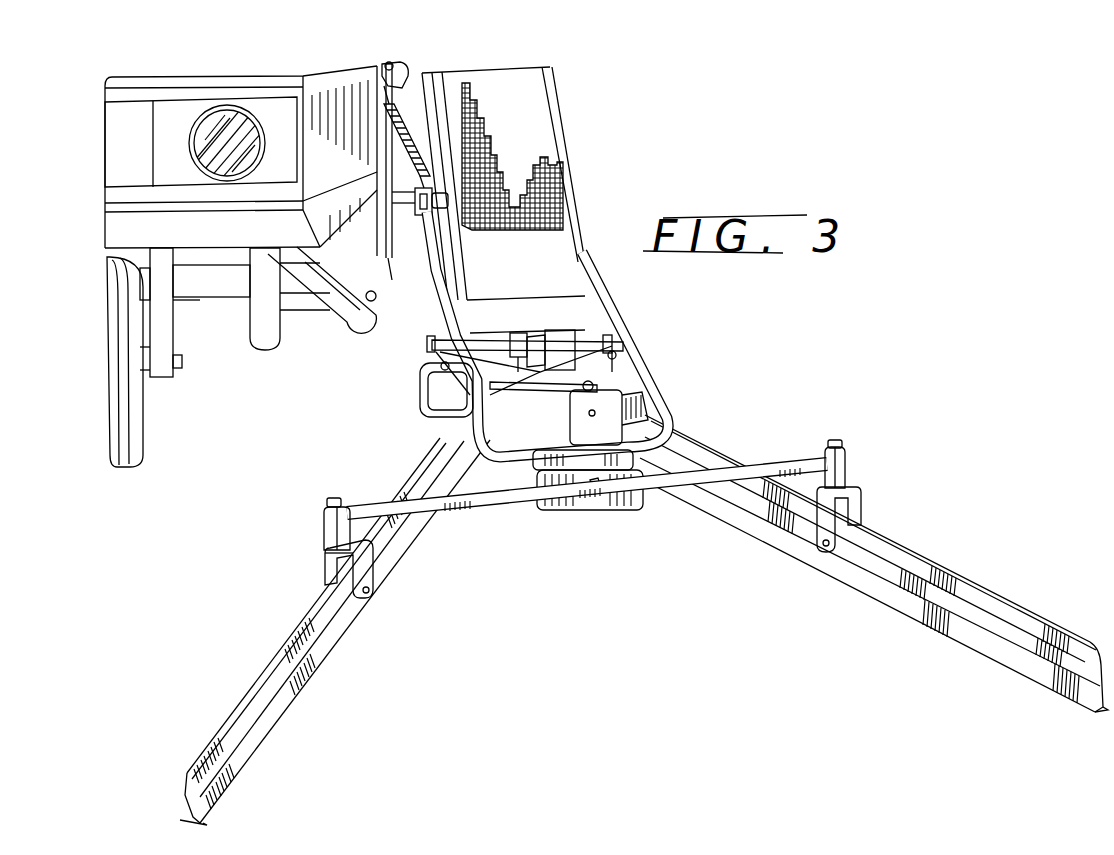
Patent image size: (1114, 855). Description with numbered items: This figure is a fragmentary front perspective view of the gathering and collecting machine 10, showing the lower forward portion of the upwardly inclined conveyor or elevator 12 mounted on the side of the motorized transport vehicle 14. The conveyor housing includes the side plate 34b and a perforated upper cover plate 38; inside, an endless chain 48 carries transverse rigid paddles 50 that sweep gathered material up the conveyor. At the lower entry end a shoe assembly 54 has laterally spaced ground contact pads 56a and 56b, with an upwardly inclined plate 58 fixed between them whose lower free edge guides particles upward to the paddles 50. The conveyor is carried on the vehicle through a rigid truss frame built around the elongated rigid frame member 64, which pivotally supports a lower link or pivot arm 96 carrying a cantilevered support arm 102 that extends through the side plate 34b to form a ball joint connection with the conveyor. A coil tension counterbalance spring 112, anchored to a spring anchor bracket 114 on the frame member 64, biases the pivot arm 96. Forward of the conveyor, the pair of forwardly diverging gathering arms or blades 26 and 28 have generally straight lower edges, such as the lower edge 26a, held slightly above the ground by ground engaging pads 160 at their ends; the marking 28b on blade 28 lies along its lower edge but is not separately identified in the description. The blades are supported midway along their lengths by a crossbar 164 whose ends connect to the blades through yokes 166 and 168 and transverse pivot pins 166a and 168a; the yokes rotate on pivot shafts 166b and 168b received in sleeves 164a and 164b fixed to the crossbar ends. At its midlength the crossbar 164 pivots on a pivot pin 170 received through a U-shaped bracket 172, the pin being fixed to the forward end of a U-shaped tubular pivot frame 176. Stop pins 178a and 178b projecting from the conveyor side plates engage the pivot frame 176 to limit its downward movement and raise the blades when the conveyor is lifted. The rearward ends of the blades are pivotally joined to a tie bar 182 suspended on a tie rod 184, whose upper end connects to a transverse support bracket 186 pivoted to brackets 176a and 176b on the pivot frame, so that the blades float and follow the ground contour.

The gathering and collecting machine 10 is at (233, 497).
The inclined conveyor or elevator 12 is at (578, 150).
The motorized transport vehicle 14 is at (100, 232).
The gathering arm or blade 26 is at (960, 573).
The lower edge of gathering arm 26a is at (947, 632).
The gathering arm or blade 28 is at (278, 663).
The left blade lower flange 28b is at (305, 683).
The side plate 34b is at (462, 285).
The upper cover plate 38 is at (565, 185).
The endless chain 48 is at (518, 333).
The transverse rigid paddles 50 is at (540, 333).
The shoe assembly 54 is at (432, 411).
The ground contact pad 56a is at (613, 393).
The ground contact pad 56b is at (430, 390).
The upwardly inclined plate 58 is at (552, 367).
The rigid frame member 64 is at (376, 296).
The lower link or pivot arm 96 is at (415, 208).
The cantilevered support arm 102 is at (430, 216).
The counterbalance spring 112 is at (398, 140).
The spring anchor bracket 114 is at (395, 84).
The ground engaging pad 160 is at (183, 820).
The crossbar 164 is at (475, 512).
The sleeve 164a is at (843, 468).
The sleeve 164b is at (340, 541).
The yoke 166 is at (860, 503).
The transverse pivot pin 166a is at (820, 545).
The pivot shaft 166b is at (840, 437).
The yoke 168 is at (372, 575).
The transverse pivot pin 168a is at (382, 594).
The pivot shaft 168b is at (330, 493).
The pivot pin 170 is at (600, 497).
The U-shaped bracket 172 is at (555, 503).
The tubular pivot frame 176 is at (653, 417).
The bracket on pivot frame 176a is at (610, 347).
The bracket on pivot frame 176b is at (440, 367).
The stub shaft or stop pin 178a is at (595, 337).
The stub shaft or stop pin 178b is at (432, 344).
The tie bar 182 is at (510, 397).
The tie rod 184 is at (542, 380).
The transverse support bracket 186 is at (613, 387).